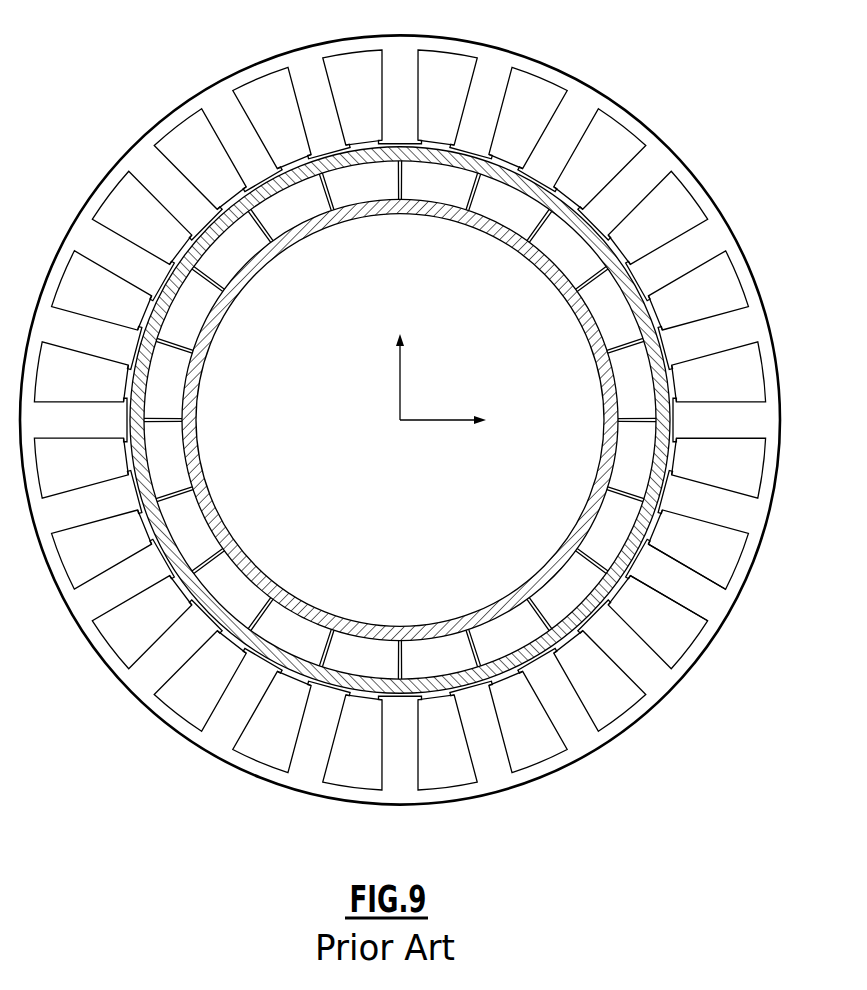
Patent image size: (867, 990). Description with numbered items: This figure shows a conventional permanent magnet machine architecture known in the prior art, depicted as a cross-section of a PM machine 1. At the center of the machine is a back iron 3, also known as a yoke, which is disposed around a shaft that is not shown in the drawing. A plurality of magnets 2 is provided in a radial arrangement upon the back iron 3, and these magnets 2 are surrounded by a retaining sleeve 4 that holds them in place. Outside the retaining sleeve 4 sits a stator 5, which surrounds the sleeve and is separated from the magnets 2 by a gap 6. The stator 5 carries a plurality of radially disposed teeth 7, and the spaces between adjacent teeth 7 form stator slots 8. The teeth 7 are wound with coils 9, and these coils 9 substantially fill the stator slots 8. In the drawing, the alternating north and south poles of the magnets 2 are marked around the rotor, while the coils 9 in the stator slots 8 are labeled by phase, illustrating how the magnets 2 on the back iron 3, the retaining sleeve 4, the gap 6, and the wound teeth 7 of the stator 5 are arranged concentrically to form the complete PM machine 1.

The PM machine 1 is at (114, 54).
The magnets 2 is at (620, 364).
The back iron 3 is at (193, 372).
The retaining sleeve 4 is at (650, 344).
The stator 5 is at (545, 67).
The gap 6 is at (672, 416).
The teeth 7 is at (697, 593).
The stator slots 8 is at (694, 193).
The coils 9 is at (670, 638).